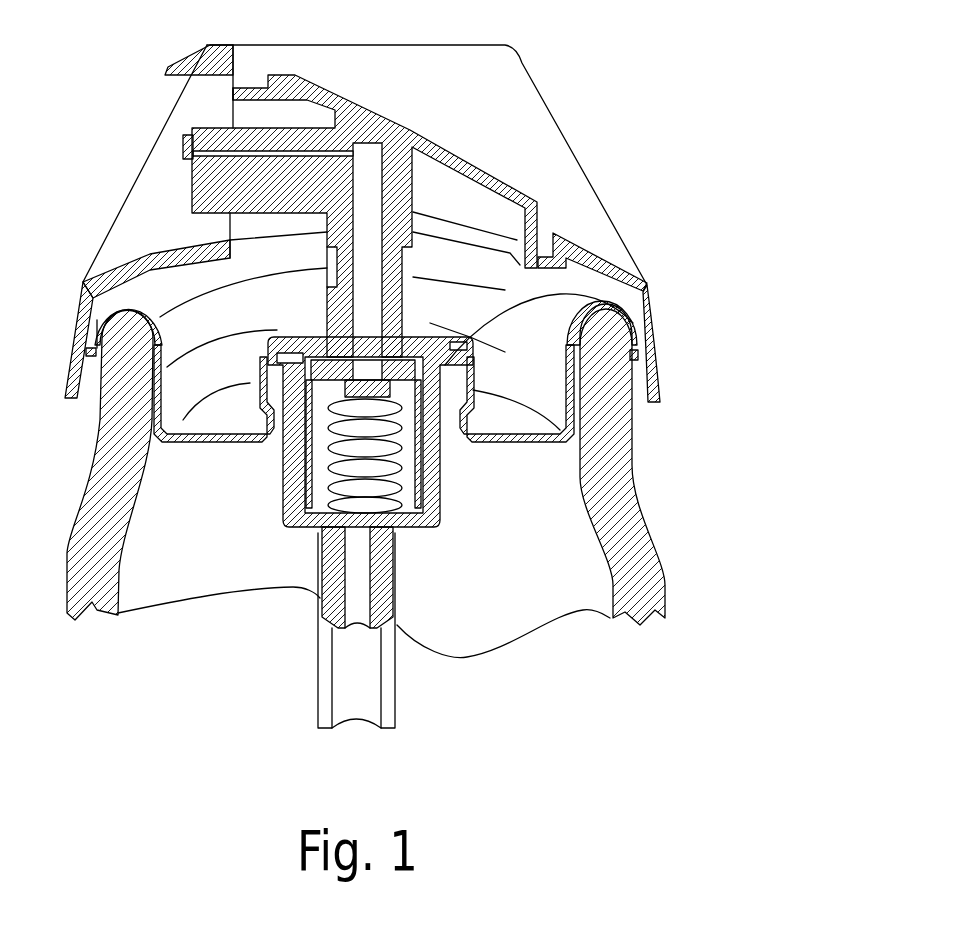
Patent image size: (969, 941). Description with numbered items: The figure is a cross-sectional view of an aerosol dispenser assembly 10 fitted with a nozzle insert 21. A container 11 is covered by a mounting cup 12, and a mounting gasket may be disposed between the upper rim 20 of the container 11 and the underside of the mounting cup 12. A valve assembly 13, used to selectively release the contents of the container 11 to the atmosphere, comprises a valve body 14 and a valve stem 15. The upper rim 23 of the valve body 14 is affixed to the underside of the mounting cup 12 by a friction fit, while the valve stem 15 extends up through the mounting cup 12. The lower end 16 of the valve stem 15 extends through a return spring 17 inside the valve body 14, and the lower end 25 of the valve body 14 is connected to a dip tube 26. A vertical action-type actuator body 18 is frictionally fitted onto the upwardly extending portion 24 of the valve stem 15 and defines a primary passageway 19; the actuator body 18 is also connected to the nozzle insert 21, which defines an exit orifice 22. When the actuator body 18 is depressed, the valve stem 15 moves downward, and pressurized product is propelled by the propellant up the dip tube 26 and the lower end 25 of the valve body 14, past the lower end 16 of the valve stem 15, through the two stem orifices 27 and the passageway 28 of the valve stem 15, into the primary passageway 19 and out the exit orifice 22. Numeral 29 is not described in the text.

The aerosol dispenser assembly 10 is at (585, 108).
The container 11 is at (641, 484).
The mounting cup 12 is at (590, 268).
The valve assembly 13 is at (272, 437).
The valve body 14 is at (444, 472).
The valve stem 15 is at (415, 300).
The lower end of the valve stem 16 is at (293, 452).
The return spring 17 is at (326, 490).
The actuator body 18 is at (422, 200).
The primary passageway 19 is at (384, 177).
The upper rim of the container 20 is at (613, 335).
The nozzle insert 21 is at (170, 155).
The exit orifice 22 is at (184, 148).
The upper rim of the valve body 23 is at (463, 370).
The upwardly extending portion of the valve stem 24 is at (393, 268).
The lower end of the valve body 25 is at (381, 575).
The dip tube 26 is at (397, 677).
The valve stem orifice 27 is at (396, 316).
The passageway of the valve stem 28 is at (337, 287).
The gap 29 is at (215, 133).